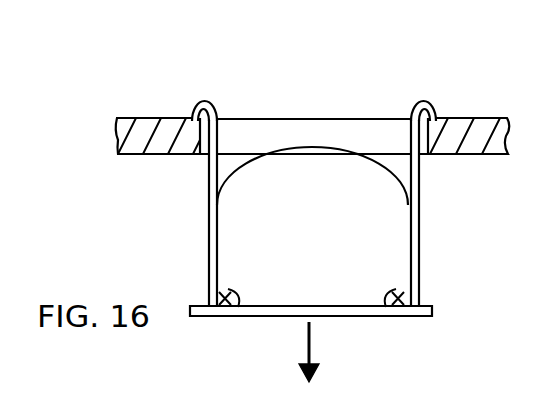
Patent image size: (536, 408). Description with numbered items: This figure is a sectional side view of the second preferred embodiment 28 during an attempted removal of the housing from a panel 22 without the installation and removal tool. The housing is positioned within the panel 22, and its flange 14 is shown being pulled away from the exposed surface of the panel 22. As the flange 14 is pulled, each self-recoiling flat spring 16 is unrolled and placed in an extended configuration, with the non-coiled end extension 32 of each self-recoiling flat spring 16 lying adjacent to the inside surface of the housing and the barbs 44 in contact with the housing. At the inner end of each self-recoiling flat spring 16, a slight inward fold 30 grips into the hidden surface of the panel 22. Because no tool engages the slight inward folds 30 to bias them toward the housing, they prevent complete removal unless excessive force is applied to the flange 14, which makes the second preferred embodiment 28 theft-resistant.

The flange 14 is at (423, 318).
The self-recoiling flat spring 16 is at (208, 213).
The panel 22 is at (170, 123).
The second preferred embodiment 28 is at (254, 94).
The slight inward fold 30 is at (195, 94).
The non-coiled end extension 32 is at (230, 318).
The barb 44 is at (232, 272).